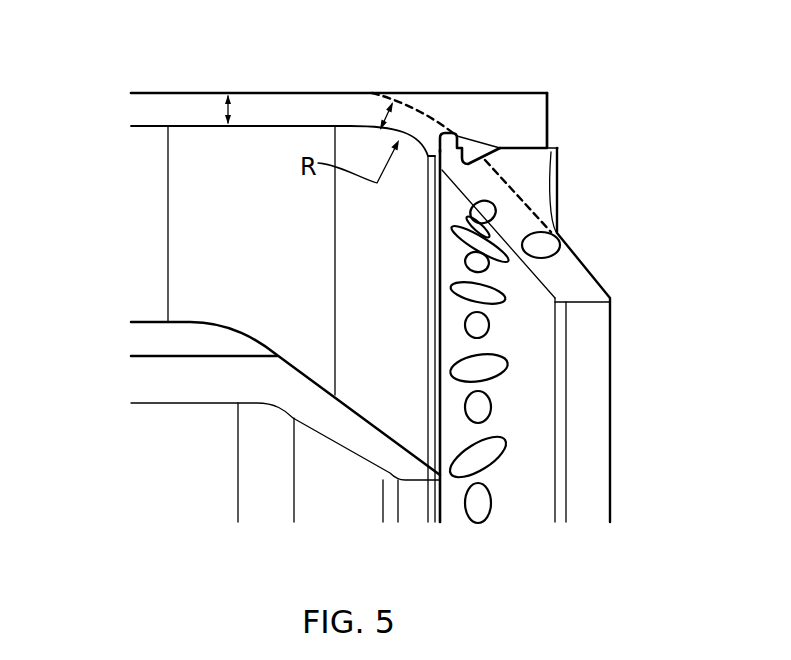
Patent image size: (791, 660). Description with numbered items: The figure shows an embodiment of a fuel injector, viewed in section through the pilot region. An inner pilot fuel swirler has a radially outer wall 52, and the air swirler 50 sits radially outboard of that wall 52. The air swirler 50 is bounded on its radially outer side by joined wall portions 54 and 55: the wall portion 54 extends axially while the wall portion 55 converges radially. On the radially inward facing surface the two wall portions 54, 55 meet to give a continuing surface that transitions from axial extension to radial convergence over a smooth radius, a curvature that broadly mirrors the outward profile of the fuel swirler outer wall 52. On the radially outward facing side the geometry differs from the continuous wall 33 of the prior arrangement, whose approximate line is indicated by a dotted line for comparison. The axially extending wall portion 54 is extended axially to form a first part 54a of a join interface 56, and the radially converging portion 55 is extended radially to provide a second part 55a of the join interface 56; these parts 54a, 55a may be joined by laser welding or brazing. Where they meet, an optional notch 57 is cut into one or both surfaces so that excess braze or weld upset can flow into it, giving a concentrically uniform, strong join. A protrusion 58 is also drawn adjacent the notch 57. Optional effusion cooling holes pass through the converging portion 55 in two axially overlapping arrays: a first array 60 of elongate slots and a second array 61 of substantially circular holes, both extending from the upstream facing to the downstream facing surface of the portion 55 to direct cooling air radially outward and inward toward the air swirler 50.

The continuous wall 33 is at (425, 110).
The air swirler 50 is at (160, 262).
The radially outer wall 52 is at (152, 387).
The wall portion 54 is at (152, 112).
The first part 54a is at (570, 113).
The wall portion 55 is at (565, 268).
The second part 55a is at (566, 198).
The join interface 56 is at (566, 148).
The notch 57 is at (455, 133).
The protrusion 58 is at (472, 143).
The first array of cooling holes 60 is at (497, 297).
The second array of cooling holes 61 is at (480, 407).